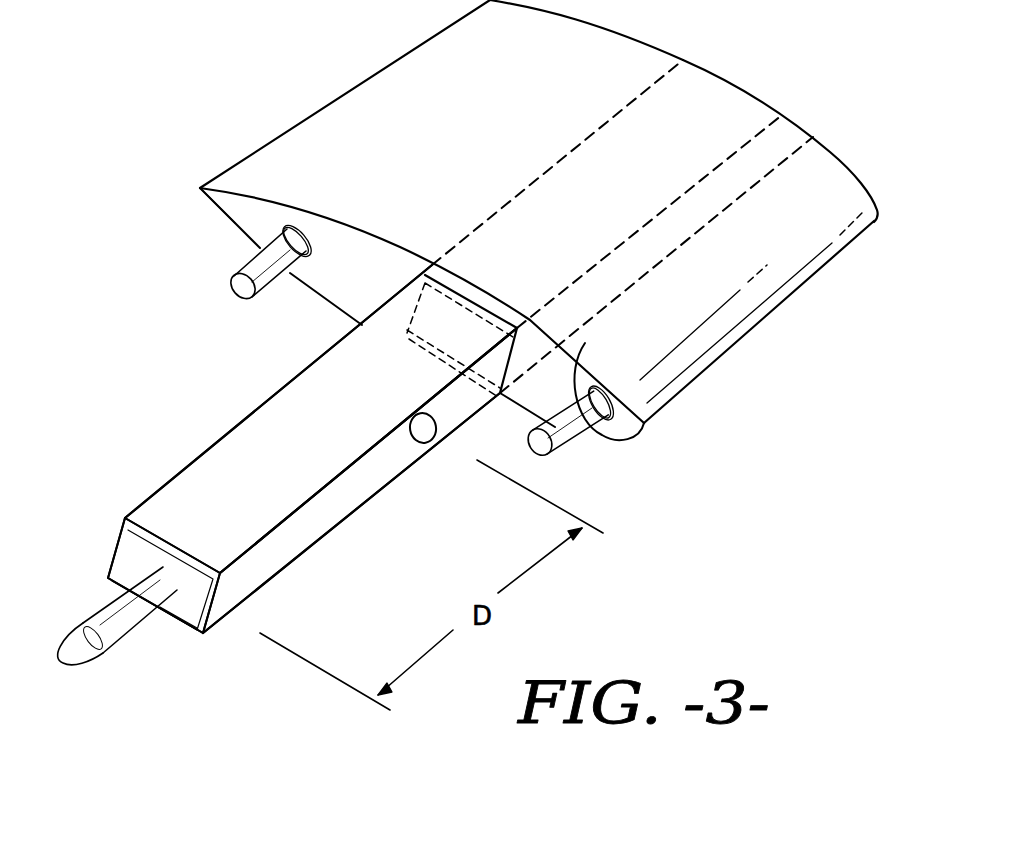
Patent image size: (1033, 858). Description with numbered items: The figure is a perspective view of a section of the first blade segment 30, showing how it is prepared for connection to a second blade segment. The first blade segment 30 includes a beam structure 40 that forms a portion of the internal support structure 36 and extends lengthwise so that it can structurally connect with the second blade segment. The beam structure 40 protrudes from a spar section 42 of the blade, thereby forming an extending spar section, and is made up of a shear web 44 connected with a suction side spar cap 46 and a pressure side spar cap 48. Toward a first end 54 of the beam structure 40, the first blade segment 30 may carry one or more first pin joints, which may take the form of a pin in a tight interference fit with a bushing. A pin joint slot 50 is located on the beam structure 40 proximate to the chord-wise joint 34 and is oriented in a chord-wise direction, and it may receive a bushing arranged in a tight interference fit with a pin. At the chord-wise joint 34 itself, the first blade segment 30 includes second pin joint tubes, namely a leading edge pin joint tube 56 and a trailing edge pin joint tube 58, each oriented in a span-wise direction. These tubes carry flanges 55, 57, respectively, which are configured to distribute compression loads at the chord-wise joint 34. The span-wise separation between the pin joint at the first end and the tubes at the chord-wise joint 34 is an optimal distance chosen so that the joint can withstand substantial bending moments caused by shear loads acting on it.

The first blade segment 30 is at (380, 100).
The spar section 42 is at (708, 100).
The chord-wise joint 34 is at (230, 222).
The flange 57 is at (280, 225).
The trailing edge pin joint tube 58 is at (237, 287).
The pressure side spar cap 48 is at (473, 293).
The suction side spar cap 46 is at (430, 352).
The internal support structure 36 is at (330, 558).
The beam structure 40 is at (262, 430).
The shear web 44 is at (365, 483).
The pin joint slot 50 is at (437, 436).
The first end 54 is at (225, 628).
The flange 55 is at (585, 357).
The leading edge pin joint tube 56 is at (573, 443).